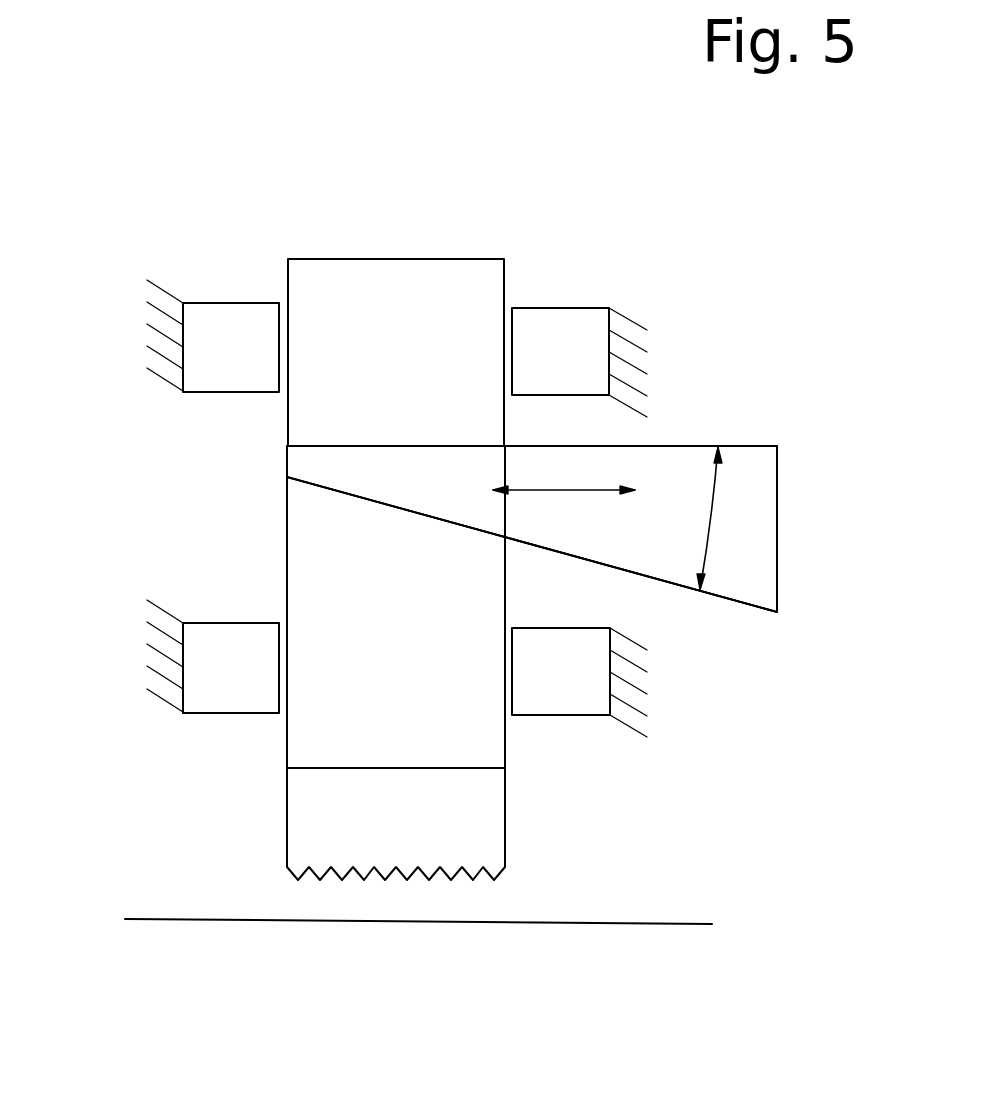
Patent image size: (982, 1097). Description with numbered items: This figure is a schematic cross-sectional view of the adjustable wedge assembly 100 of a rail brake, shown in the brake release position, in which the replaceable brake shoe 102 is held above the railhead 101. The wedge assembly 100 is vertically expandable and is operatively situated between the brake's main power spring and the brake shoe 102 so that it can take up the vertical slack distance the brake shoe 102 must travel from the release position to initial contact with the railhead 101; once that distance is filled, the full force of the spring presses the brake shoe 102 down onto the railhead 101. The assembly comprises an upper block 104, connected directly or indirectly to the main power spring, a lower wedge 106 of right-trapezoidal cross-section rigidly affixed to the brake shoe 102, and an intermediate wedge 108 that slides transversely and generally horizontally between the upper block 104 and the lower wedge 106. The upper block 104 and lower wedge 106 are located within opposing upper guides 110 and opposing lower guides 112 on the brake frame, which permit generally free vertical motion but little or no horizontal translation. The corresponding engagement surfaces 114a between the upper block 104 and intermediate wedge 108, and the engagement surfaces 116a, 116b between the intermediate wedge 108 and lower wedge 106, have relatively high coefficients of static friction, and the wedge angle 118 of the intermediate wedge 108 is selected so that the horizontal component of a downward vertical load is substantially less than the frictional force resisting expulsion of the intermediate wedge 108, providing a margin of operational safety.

The adjustable wedge assembly 100 is at (278, 197).
The railhead 101 is at (682, 923).
The brake shoe 102 is at (480, 837).
The upper block 104 is at (458, 276).
The lower wedge 106 is at (478, 750).
The intermediate wedge 108 is at (755, 465).
The upper guides 110 is at (214, 315).
The lower guides 112 is at (213, 643).
The engagement surface 114a is at (336, 446).
The engagement surface 116a is at (380, 502).
The engagement surface 116b is at (532, 544).
The wedge angle 118 is at (710, 548).